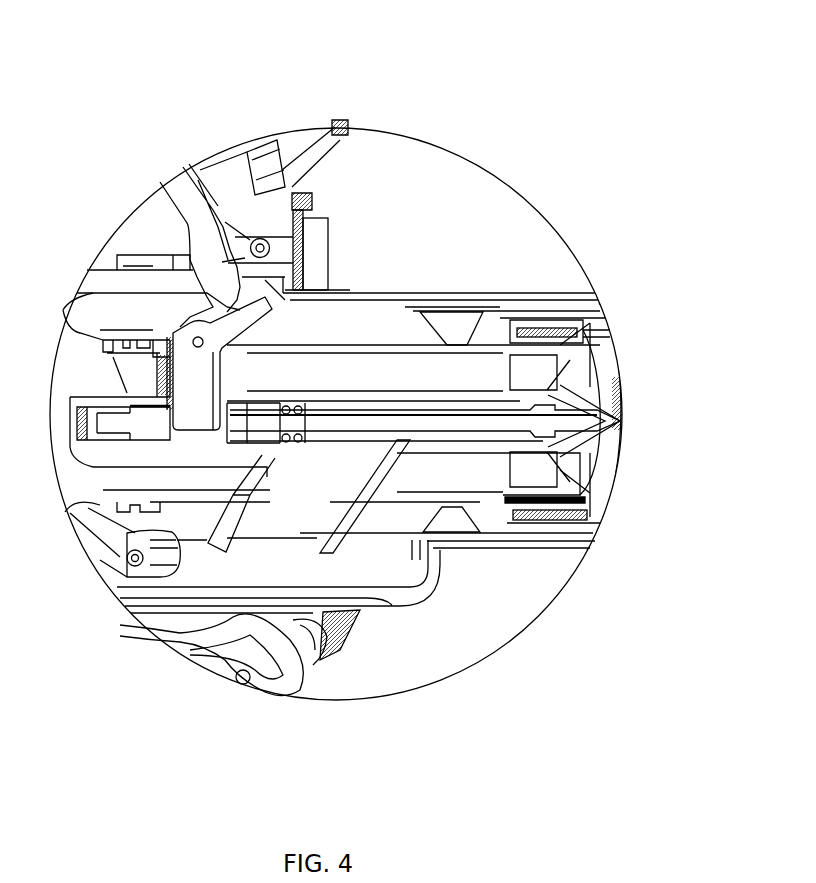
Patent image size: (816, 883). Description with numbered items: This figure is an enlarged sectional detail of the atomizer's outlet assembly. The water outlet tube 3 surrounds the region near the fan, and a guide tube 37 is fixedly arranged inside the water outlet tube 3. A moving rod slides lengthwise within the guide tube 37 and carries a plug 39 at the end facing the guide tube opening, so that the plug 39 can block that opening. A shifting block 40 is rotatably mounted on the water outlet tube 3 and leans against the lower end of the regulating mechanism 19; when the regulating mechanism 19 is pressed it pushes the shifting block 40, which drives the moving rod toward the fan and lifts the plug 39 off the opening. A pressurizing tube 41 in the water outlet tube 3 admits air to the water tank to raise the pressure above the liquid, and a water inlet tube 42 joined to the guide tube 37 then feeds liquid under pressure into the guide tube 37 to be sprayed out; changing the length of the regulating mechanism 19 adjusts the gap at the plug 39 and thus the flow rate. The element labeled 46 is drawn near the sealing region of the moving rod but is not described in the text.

The housing 3 is at (483, 518).
The operating lever assembly 19 is at (233, 142).
The end block 37 is at (158, 453).
The seal 39 is at (563, 405).
The pivot lever 40 is at (195, 340).
The angled pawl 41 is at (236, 495).
The angled pawl 42 is at (373, 498).
The seal rings 46 is at (298, 410).